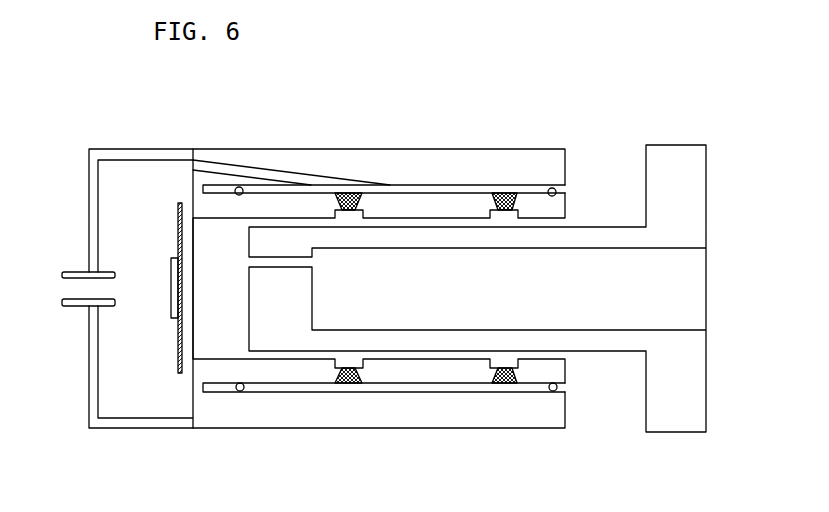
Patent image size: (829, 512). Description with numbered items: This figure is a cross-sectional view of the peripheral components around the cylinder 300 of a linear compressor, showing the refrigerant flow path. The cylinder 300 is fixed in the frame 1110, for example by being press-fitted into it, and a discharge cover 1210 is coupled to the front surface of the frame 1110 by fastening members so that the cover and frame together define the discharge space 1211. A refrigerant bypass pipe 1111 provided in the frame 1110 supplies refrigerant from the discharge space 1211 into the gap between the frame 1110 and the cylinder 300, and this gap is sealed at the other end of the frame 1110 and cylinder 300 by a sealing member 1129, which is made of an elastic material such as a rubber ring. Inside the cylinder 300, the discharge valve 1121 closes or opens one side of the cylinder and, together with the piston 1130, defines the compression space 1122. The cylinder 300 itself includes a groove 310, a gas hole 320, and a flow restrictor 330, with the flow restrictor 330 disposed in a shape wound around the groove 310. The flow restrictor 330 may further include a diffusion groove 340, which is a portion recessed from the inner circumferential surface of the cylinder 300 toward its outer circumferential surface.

The discharge cover 1210 is at (127, 149).
The discharge space 1211 is at (125, 216).
The refrigerant bypass pipe 1111 is at (238, 166).
The frame 1110 is at (272, 150).
The gas hole 320 is at (364, 210).
The sealing member 1129 is at (552, 188).
The piston 1130 is at (706, 196).
The compression space 1122 is at (205, 316).
The discharge valve 1121 is at (178, 352).
The cylinder 300 is at (217, 373).
The diffusion groove 340 is at (342, 363).
The flow restrictor 330 is at (357, 384).
The groove 310 is at (367, 384).